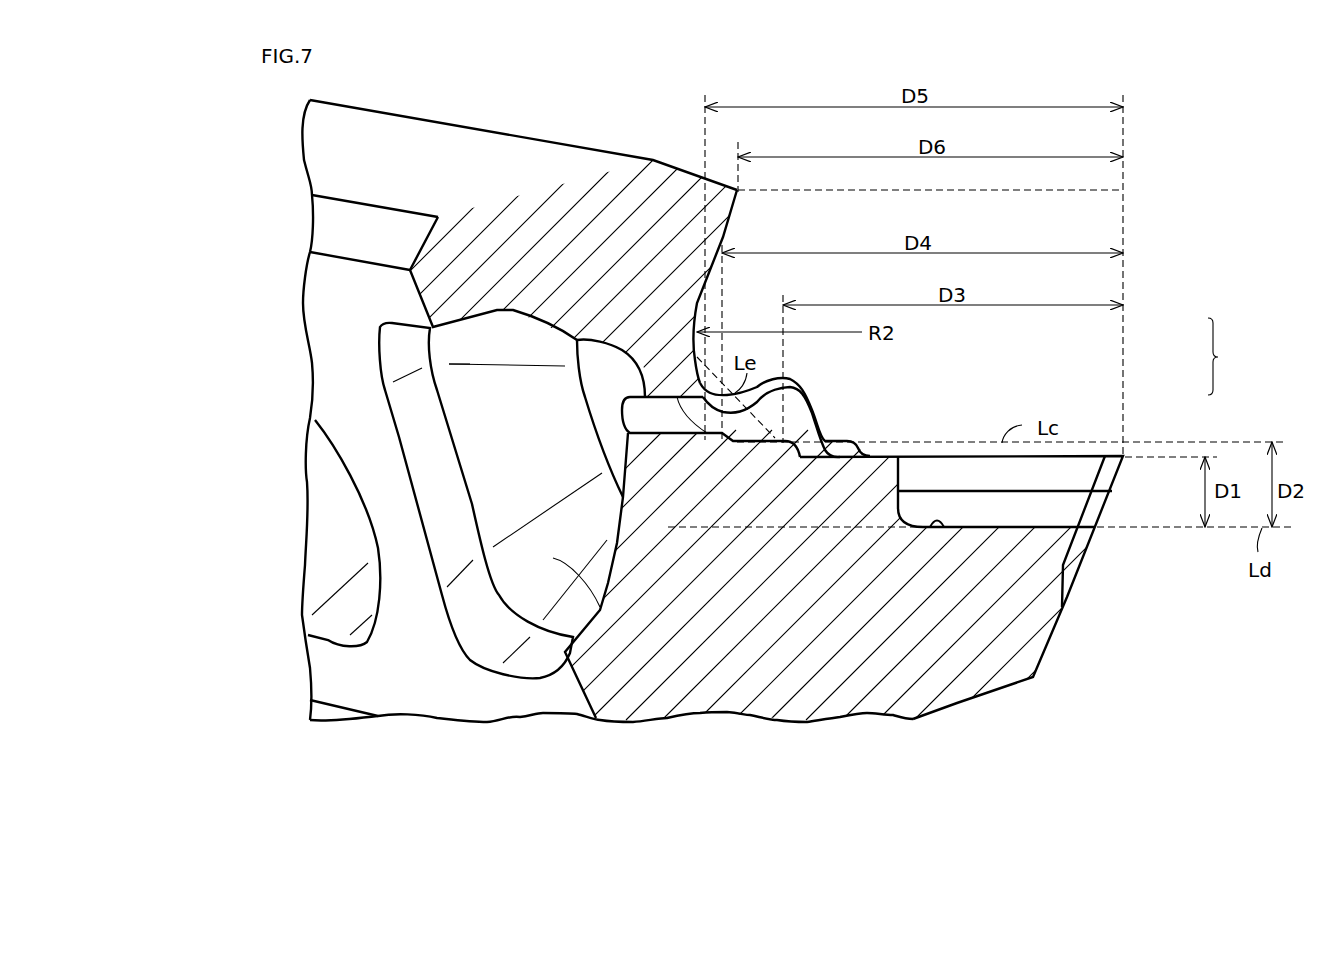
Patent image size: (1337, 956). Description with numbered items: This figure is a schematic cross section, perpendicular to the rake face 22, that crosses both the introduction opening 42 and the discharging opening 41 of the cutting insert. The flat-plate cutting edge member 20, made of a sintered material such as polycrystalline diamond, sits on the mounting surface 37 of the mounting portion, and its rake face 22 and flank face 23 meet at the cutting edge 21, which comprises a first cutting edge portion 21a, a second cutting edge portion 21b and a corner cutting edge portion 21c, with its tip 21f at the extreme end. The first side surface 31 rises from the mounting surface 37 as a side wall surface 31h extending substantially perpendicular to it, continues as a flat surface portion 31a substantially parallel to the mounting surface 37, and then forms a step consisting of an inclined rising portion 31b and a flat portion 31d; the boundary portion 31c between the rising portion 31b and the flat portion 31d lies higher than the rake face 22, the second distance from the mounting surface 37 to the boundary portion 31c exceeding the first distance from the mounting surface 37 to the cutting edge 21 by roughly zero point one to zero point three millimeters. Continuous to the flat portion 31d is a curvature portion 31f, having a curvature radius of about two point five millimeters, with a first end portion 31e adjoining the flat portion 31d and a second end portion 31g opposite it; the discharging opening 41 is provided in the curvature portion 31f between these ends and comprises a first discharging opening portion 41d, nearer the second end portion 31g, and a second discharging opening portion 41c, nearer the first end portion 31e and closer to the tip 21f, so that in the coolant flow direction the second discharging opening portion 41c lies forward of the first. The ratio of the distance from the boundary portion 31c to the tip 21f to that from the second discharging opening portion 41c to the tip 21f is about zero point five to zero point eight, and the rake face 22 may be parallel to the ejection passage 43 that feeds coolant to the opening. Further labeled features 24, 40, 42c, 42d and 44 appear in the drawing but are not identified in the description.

The cutting edge member 20 is at (1020, 646).
The cutting edge 21 is at (1146, 630).
The first cutting edge portion 21a is at (1064, 600).
The second cutting edge portion 21b is at (1108, 456).
The corner cutting edge portion 21c is at (1110, 456).
The tip 21f is at (1123, 456).
The rake face 22 is at (970, 457).
The flank face 23 is at (1030, 490).
The shim 24 is at (1005, 475).
The first side surface 31 is at (996, 316).
The flat surface portion 31a is at (880, 443).
The rising portion 31b is at (822, 436).
The boundary portion 31c is at (815, 420).
The flat portion 31d is at (813, 398).
The first end portion 31e is at (760, 410).
The curvature portion 31f is at (697, 303).
The second end portion 31g is at (738, 190).
The side wall surface 31h is at (930, 443).
The mounting surface 37 is at (923, 532).
The cutting tool 40 is at (716, 468).
The discharging opening 41 is at (745, 768).
The second discharging opening portion 41c is at (723, 438).
The first discharging opening portion 41d is at (707, 396).
The introduction opening 42 is at (553, 768).
The body inner face 42c is at (565, 655).
The body inner wall 42d is at (432, 328).
The ejection passage 43 is at (662, 415).
The tab seating face 44 is at (552, 558).